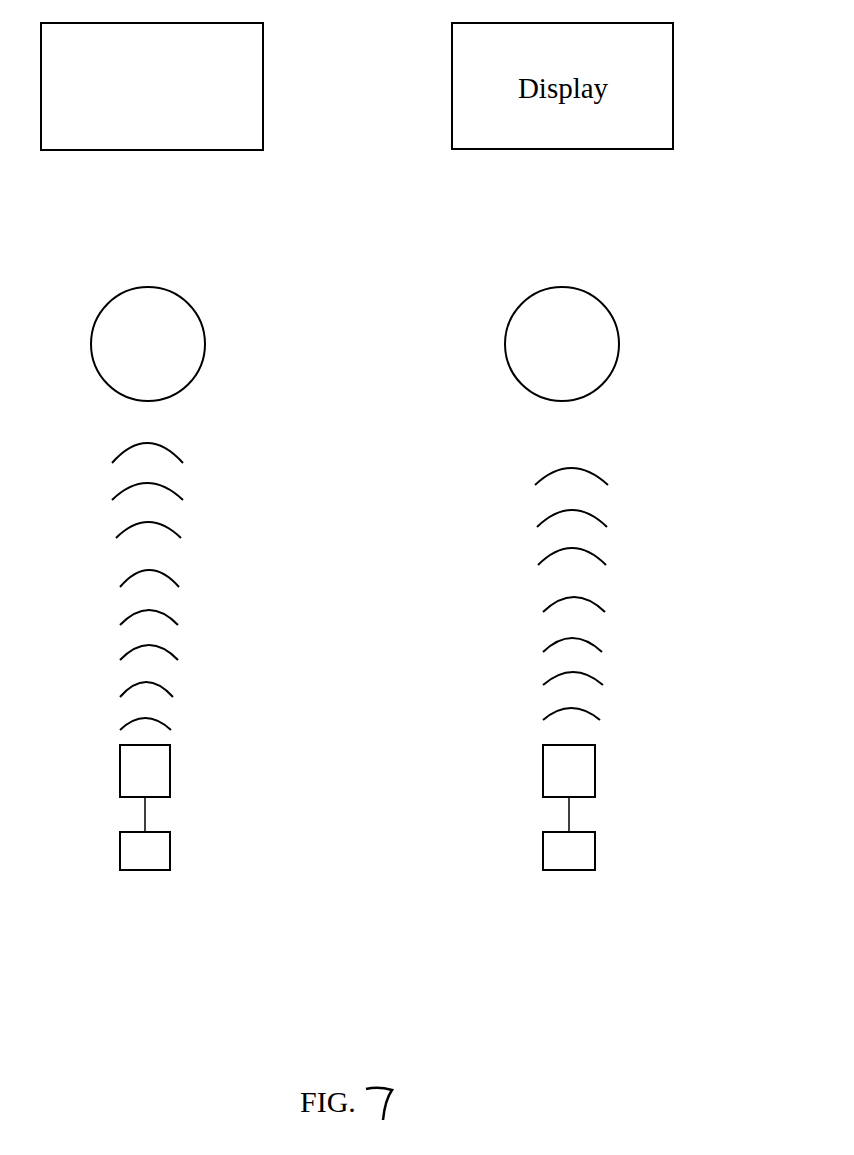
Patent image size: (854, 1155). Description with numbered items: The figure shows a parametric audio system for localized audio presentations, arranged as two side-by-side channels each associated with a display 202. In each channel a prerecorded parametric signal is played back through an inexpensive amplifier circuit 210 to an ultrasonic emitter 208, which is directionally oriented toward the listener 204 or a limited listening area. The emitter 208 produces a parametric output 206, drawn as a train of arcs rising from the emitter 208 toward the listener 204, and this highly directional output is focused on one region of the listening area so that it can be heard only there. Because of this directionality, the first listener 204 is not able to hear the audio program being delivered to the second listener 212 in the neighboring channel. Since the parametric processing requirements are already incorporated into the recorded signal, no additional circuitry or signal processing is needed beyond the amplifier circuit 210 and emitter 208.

The display 202 is at (263, 108).
The listener 204 is at (205, 344).
The parametric output 206 is at (210, 450).
The ultrasonic emitter 208 is at (170, 787).
The amplifier circuit 210 is at (170, 853).
The second listener 212 is at (620, 344).